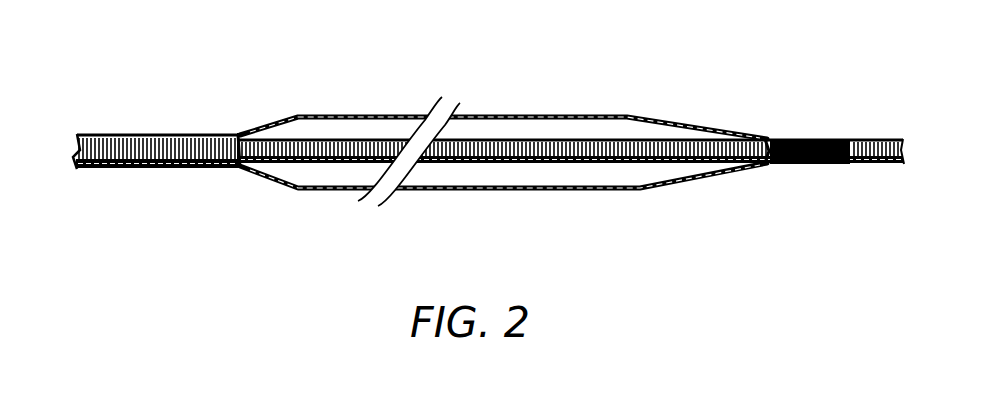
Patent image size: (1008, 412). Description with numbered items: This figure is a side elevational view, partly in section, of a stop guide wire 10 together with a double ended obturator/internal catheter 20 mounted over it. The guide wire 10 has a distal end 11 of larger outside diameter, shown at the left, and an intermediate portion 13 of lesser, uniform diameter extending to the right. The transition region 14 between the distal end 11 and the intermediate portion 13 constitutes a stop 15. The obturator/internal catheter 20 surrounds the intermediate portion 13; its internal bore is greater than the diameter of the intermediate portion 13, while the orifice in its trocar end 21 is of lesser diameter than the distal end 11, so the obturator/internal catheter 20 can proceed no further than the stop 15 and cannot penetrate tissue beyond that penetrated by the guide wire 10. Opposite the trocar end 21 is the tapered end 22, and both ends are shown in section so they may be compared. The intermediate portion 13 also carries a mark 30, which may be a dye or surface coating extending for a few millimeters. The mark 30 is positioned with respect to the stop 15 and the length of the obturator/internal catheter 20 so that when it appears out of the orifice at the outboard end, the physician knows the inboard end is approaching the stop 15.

The guide wire 10 is at (488, 141).
The distal end 11 is at (116, 135).
The intermediate portion 13 is at (575, 143).
The transition region 14 is at (236, 135).
The stop 15 is at (243, 173).
The obturator/internal catheter 20 is at (400, 117).
The trocar end 21 is at (276, 184).
The tapered end 22 is at (723, 130).
The mark 30 is at (808, 169).